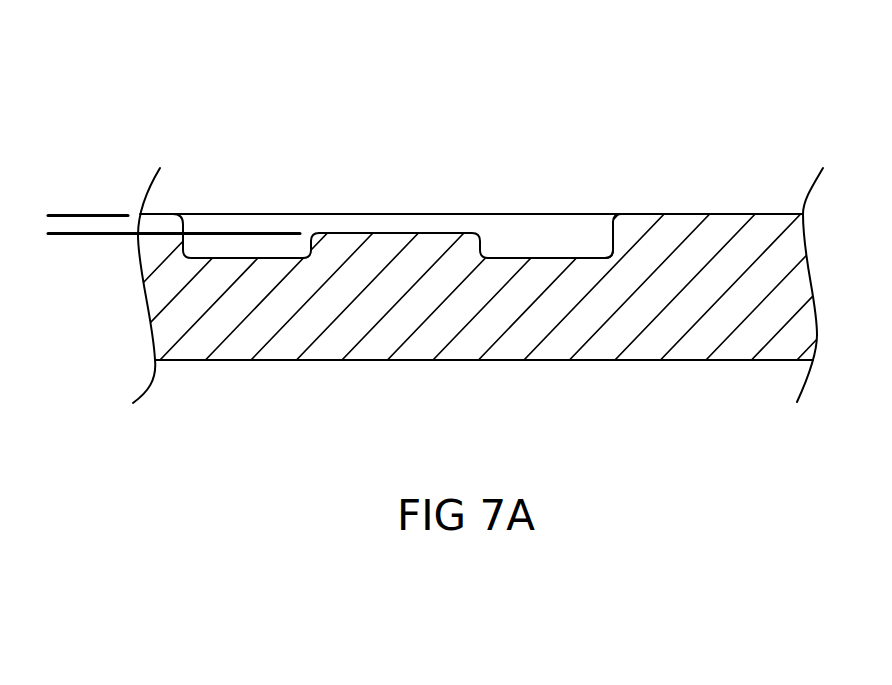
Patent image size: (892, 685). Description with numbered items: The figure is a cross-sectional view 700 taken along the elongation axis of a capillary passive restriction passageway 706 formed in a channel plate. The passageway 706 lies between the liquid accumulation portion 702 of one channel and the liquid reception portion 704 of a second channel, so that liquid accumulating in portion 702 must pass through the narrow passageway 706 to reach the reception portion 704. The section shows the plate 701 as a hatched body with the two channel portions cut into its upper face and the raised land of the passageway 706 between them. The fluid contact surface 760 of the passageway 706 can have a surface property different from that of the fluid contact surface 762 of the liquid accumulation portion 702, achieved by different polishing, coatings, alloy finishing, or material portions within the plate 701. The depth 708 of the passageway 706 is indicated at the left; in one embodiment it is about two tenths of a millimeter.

The substrate structure with recessed features 700 is at (685, 62).
The plate 701 is at (688, 305).
The liquid accumulation portion 702 is at (545, 233).
The liquid reception portion 704 is at (243, 227).
The capillary passive restriction passageway 706 is at (407, 228).
The depth 708 is at (62, 290).
The fluid contact surface 760 is at (363, 232).
The fluid contact surface 762 is at (577, 250).